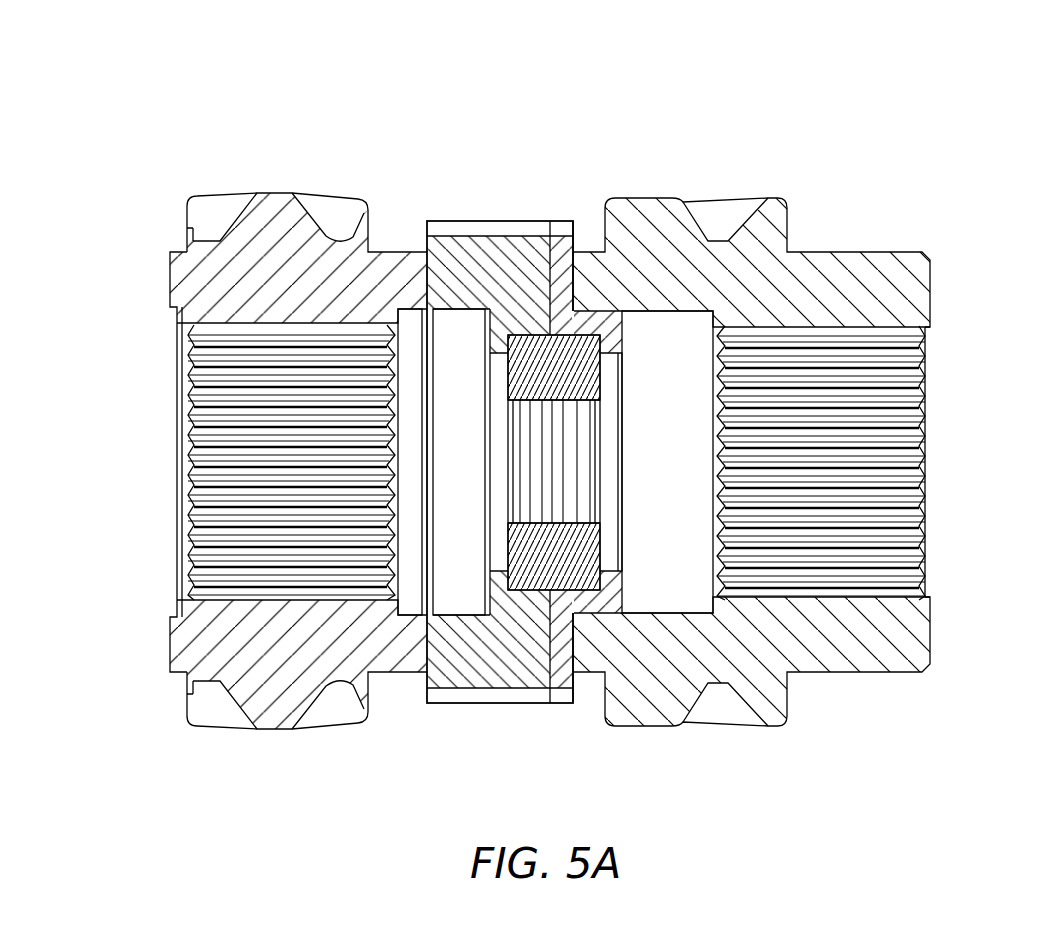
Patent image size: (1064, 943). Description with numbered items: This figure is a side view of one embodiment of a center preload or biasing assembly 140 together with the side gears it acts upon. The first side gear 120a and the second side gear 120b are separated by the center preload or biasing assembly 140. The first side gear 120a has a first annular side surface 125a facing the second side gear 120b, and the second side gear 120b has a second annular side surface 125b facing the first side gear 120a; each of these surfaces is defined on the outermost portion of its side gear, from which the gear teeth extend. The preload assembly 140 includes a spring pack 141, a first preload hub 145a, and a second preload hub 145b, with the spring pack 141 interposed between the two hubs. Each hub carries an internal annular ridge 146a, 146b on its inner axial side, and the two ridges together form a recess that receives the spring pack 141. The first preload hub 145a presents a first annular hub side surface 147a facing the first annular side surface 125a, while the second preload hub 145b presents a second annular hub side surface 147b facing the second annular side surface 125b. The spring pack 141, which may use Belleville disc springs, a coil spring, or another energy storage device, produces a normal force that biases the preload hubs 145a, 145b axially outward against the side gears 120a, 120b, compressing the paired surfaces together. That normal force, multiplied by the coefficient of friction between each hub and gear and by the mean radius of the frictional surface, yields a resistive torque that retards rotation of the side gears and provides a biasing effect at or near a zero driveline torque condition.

The first side gear 120a is at (232, 431).
The second side gear 120b is at (852, 435).
The center preload or biasing assembly 140 is at (583, 89).
The spring pack 141 is at (537, 330).
The first annular side surface 125a is at (431, 662).
The second annular side surface 125b is at (566, 652).
The first preload hub 145a is at (493, 258).
The second preload hub 145b is at (558, 258).
The internal annular ridge 146a is at (495, 338).
The internal annular ridge 146b is at (610, 341).
The first annular hub side surface 147a is at (416, 651).
The second annular hub side surface 147b is at (578, 643).